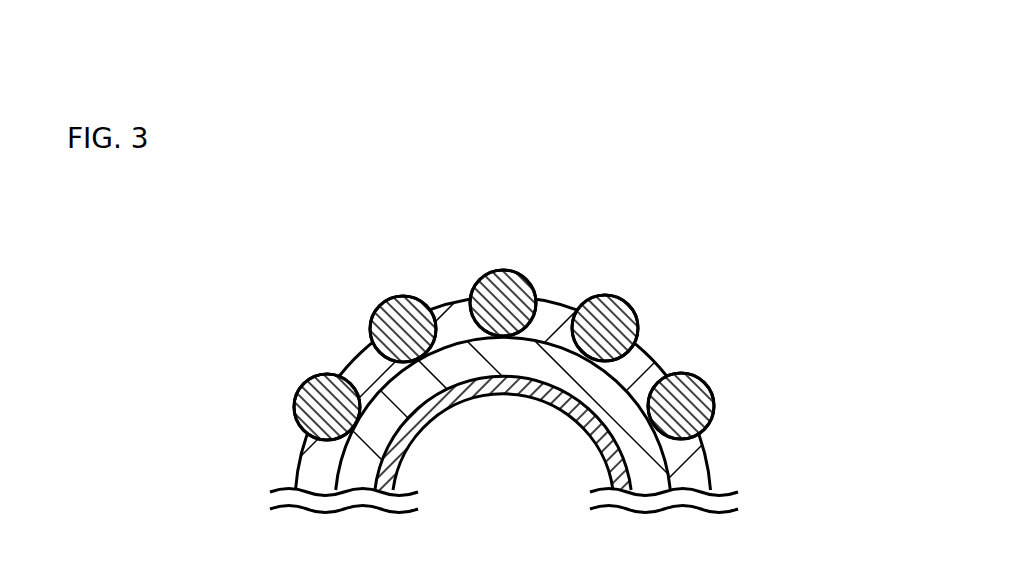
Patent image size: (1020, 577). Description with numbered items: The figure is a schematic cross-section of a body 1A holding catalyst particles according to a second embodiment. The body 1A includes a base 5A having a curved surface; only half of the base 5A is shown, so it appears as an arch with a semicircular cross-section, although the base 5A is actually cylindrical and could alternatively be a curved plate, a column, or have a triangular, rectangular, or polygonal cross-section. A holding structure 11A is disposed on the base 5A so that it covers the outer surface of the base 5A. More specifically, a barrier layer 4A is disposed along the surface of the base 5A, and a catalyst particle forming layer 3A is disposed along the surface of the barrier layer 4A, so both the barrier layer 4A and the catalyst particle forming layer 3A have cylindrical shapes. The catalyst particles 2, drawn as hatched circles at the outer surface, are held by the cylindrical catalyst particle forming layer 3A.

The body holding catalyst particles 1A is at (612, 230).
The catalyst particles 2 is at (620, 293).
The catalyst particle forming layer 3A is at (717, 470).
The barrier layer 4A is at (337, 462).
The base 5A is at (640, 470).
The holding structure 11A is at (346, 359).